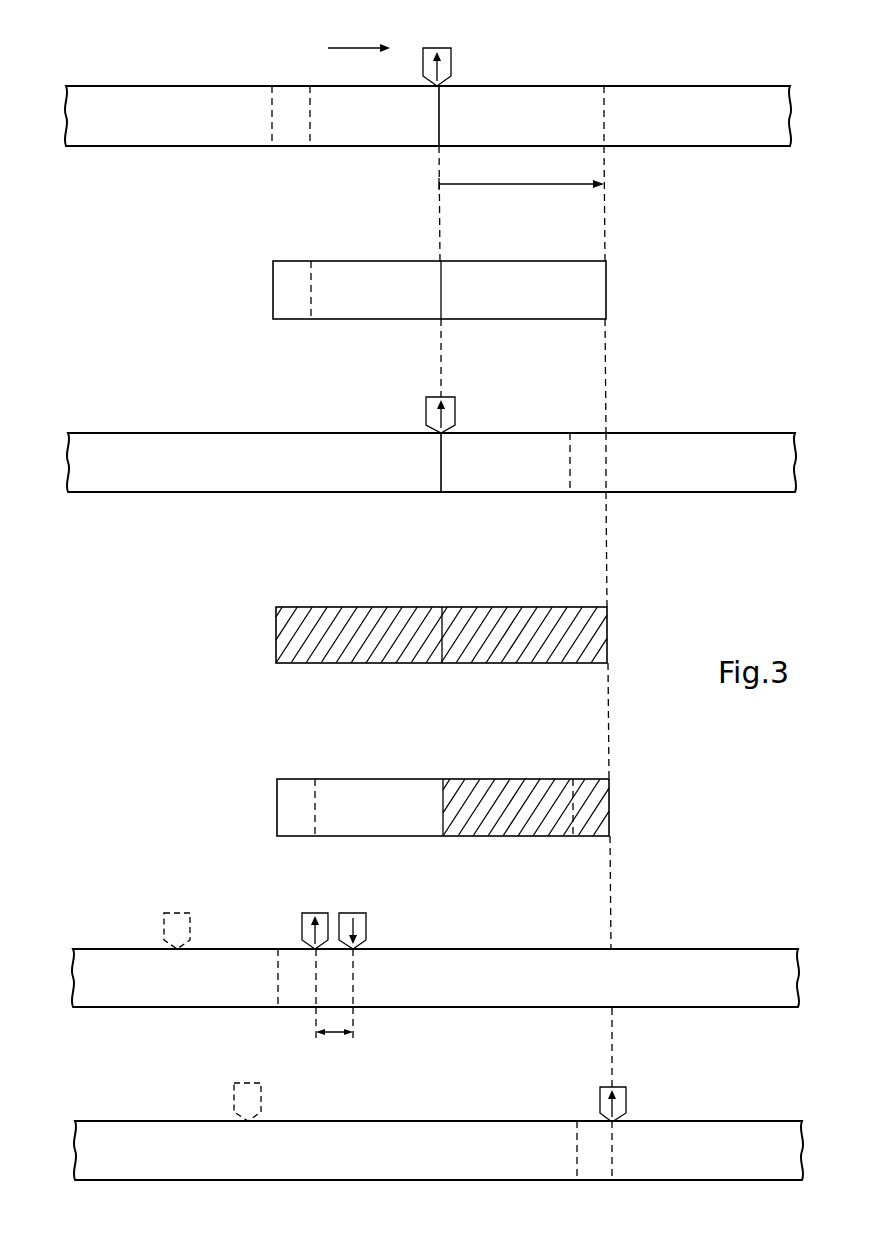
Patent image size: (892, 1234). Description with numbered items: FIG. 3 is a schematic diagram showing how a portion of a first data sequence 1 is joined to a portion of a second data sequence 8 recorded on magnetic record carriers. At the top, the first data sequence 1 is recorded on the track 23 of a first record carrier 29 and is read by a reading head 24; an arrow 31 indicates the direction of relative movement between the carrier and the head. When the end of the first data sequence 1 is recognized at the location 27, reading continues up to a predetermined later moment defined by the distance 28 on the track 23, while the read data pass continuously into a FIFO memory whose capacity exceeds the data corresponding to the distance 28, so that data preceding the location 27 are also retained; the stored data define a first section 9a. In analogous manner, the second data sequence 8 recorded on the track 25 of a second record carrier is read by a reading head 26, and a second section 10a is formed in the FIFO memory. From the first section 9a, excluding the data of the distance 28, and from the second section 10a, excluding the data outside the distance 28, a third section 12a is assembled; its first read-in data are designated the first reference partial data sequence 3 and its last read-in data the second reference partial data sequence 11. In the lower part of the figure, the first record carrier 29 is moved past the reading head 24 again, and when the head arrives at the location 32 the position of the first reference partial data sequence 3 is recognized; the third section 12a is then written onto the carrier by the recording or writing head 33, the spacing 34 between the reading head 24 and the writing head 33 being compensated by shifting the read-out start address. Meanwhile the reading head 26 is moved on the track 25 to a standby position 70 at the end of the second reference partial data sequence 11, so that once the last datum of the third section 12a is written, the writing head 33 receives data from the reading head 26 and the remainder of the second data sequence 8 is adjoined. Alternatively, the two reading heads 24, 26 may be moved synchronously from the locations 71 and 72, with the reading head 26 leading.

The first data sequence 1 is at (240, 80).
The first reference partial data sequence 3 is at (290, 135).
The second data sequence 8 is at (258, 427).
The first section 9a is at (606, 290).
The second section 10a is at (607, 630).
The second reference partial data sequence 11 is at (588, 492).
The third section 12a is at (609, 800).
The track 23 is at (605, 86).
The reading head 24 is at (452, 62).
The track 25 is at (632, 433).
The reading head 26 is at (426, 412).
The location 27 is at (438, 135).
The distance 28 is at (522, 188).
The first record carrier 29 is at (680, 950).
The transport direction 31 is at (345, 48).
The location 32 is at (316, 1010).
The recording or writing head 33 is at (366, 916).
The spacing 34 is at (336, 1036).
The standby position 70 is at (614, 1124).
The location 71 is at (180, 954).
The location 72 is at (250, 1122).